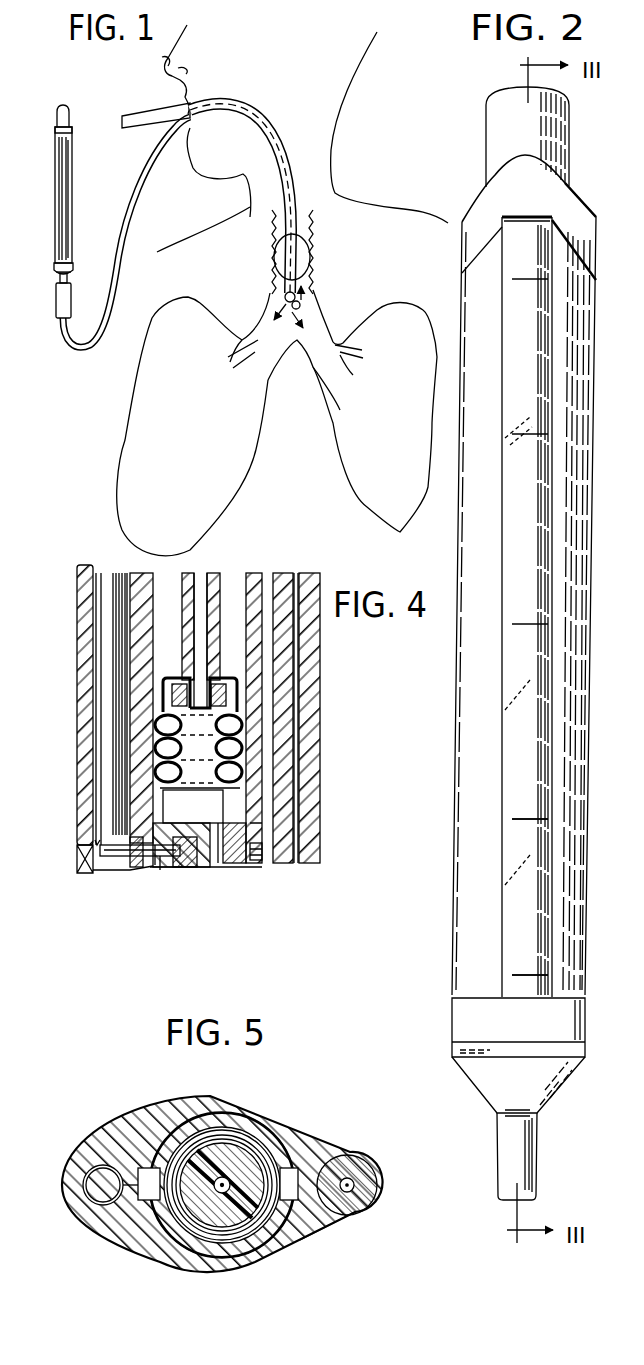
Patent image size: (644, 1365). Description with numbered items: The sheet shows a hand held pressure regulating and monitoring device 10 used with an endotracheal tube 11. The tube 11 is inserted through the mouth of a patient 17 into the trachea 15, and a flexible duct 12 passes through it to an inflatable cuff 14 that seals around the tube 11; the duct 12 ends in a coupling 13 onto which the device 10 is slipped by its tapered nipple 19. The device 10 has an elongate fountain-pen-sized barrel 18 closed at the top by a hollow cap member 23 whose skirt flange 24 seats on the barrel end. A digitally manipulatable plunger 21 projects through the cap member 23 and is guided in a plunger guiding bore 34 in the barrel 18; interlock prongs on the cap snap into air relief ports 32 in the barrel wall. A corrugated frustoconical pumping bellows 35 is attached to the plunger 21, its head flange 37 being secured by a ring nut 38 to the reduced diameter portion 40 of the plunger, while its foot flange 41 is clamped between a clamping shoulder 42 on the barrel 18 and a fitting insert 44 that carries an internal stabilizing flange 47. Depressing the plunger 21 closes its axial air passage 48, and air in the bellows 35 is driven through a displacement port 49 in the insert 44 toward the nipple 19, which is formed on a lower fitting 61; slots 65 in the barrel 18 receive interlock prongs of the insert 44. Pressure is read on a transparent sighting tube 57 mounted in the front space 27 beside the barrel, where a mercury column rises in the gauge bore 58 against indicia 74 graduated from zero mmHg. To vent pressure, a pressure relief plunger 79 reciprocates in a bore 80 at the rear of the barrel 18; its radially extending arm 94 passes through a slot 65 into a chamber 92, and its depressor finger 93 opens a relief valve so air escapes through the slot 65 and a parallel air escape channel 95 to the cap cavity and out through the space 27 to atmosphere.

In FIG. 1, the pressure regulating and monitoring device 10 is at (50, 96).
In FIG. 2, the pressure regulating and monitoring device 10 is at (600, 503).
In FIG. 1, the endotracheal tube 11 is at (274, 128).
In FIG. 1, the flexible tube or duct 12 is at (108, 312).
In FIG. 1, the outer end coupling 13 is at (55, 305).
In FIG. 1, the inflatable cuff 14 is at (304, 258).
In FIG. 1, the trachea 15 is at (275, 255).
In FIG. 1, the patient 17 is at (385, 210).
In FIG. 1, the barrel 18 is at (55, 189).
In FIG. 2, the barrel 18 is at (455, 885).
In FIG. 4, the barrel 18 is at (78, 666).
In FIG. 5, the barrel 18 is at (167, 1255).
In FIG. 1, the tapered nipple 19 is at (69, 282).
In FIG. 2, the tapered nipple 19 is at (537, 1168).
In FIG. 1, the plunger 21 is at (67, 105).
In FIG. 2, the plunger 21 is at (560, 127).
In FIG. 5, the plunger 21 is at (223, 1227).
In FIG. 1, the cap member 23 is at (72, 128).
In FIG. 2, the cap member 23 is at (575, 195).
In FIG. 2, the skirt flange 24 is at (578, 240).
In FIG. 4, the space 27 is at (284, 578).
In FIG. 5, the space 27 is at (310, 1148).
In FIG. 5, the air relief ports 32 is at (150, 1168).
In FIG. 5, the plunger guiding bore 34 is at (217, 1130).
In FIG. 4, the pumping bellows 35 is at (250, 746).
In FIG. 5, the pumping bellows 35 is at (244, 1138).
In FIG. 4, the annular flange 37 is at (222, 686).
In FIG. 4, the ring nut 38 is at (178, 686).
In FIG. 4, the reduced diameter portion 40 is at (236, 578).
In FIG. 5, the reduced diameter portion 40 is at (270, 1247).
In FIG. 4, the annular flange 41 is at (258, 826).
In FIG. 4, the clamping shoulder 42 is at (225, 866).
In FIG. 1, the fitting insert 44 is at (73, 262).
In FIG. 2, the fitting insert 44 is at (462, 1018).
In FIG. 4, the fitting insert 44 is at (248, 868).
In FIG. 5, the fitting insert 44 is at (322, 1235).
In FIG. 4, the stabilizing flange 47 is at (170, 812).
In FIG. 4, the axial air passage 48 is at (200, 577).
In FIG. 5, the axial air passage 48 is at (222, 1193).
In FIG. 4, the displacement port 49 is at (218, 866).
In FIG. 1, the sighting tube 57 is at (65, 212).
In FIG. 2, the sighting tube 57 is at (537, 546).
In FIG. 4, the sighting tube 57 is at (318, 697).
In FIG. 5, the sighting tube 57 is at (355, 1163).
In FIG. 2, the gauge bore 58 is at (541, 607).
In FIG. 4, the gauge bore 58 is at (298, 672).
In FIG. 5, the gauge bore 58 is at (354, 1185).
In FIG. 1, the fitting 61 is at (57, 274).
In FIG. 2, the fitting 61 is at (548, 1080).
In FIG. 4, the slots 65 is at (262, 850).
In FIG. 2, the indicia 74 is at (525, 815).
In FIG. 4, the pressure relief plunger 79 is at (108, 572).
In FIG. 5, the pressure relief plunger 79 is at (102, 1222).
In FIG. 4, the bore 80 is at (80, 730).
In FIG. 5, the bore 80 is at (93, 1168).
In FIG. 4, the chamber 92 is at (186, 868).
In FIG. 4, the depressor finger 93 is at (158, 870).
In FIG. 4, the radially extending arm 94 is at (110, 858).
In FIG. 4, the air escape channel 95 is at (135, 575).
In FIG. 5, the air escape channel 95 is at (128, 1180).